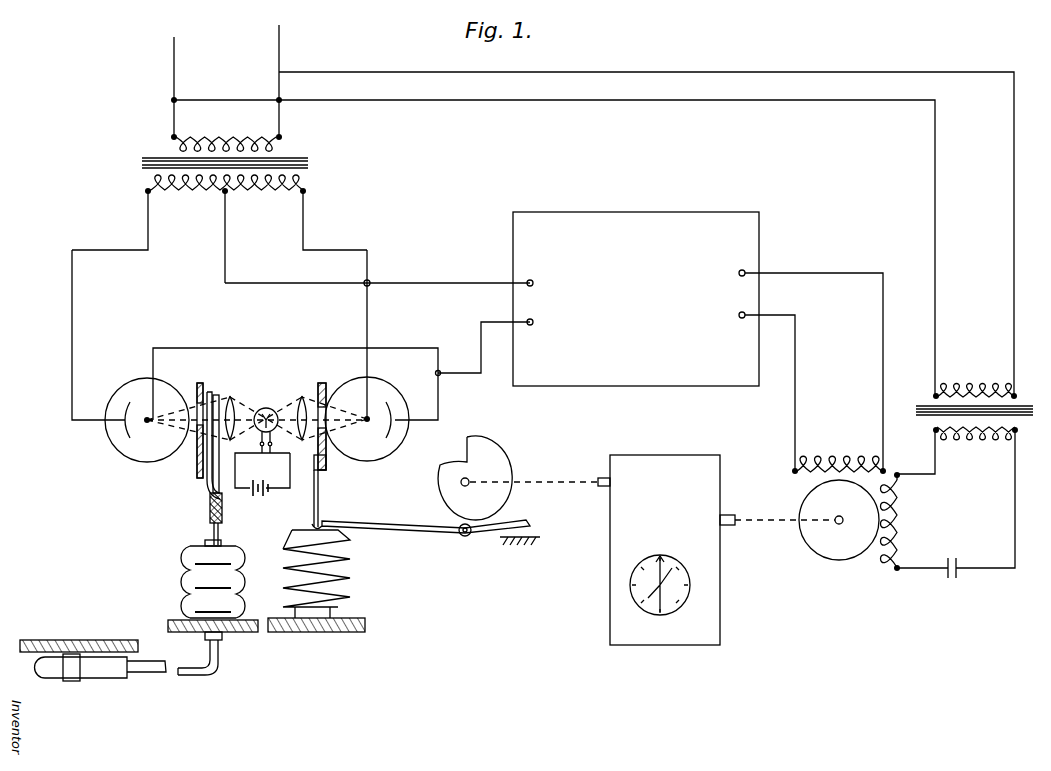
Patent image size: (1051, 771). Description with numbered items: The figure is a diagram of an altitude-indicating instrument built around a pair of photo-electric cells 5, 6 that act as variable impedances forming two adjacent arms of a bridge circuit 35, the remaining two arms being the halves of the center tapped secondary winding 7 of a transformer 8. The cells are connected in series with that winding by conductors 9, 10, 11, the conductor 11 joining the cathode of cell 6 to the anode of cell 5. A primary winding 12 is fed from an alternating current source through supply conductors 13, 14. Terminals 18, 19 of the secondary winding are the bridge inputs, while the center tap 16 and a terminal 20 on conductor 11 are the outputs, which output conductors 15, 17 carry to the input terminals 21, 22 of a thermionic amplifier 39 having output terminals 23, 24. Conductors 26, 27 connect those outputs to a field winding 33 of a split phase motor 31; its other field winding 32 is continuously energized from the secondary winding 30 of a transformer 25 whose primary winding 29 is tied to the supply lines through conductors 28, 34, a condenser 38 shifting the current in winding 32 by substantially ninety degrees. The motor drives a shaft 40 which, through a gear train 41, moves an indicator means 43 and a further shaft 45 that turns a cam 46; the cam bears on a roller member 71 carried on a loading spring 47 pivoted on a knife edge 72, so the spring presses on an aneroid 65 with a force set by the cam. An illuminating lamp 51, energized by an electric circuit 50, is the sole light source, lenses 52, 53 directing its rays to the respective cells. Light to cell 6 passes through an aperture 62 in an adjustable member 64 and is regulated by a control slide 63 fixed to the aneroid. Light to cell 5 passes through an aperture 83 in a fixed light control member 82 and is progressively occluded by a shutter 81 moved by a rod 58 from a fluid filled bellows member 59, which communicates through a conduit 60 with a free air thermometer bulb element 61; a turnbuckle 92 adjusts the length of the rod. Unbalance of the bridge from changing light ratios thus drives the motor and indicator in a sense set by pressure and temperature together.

The photo-electric cell 5 is at (124, 395).
The photo-electric cell 6 is at (393, 394).
The secondary winding 7 is at (307, 182).
The transformer 8 is at (151, 157).
The conductor 9 is at (70, 272).
The conductor 10 is at (369, 258).
The conductor 11 is at (252, 348).
The primary winding 12 is at (282, 146).
The conductor 13 is at (172, 62).
The conductor 14 is at (283, 42).
The output conductor 15 is at (223, 278).
The center tap 16 is at (224, 195).
The output conductor 17 is at (480, 328).
The terminal 18 is at (146, 195).
The terminal 19 is at (307, 194).
The terminal 20 is at (442, 379).
The input terminal 21 is at (533, 280).
The input terminal 22 is at (533, 325).
The output terminal 23 is at (738, 272).
The output terminal 24 is at (740, 318).
The transformer 25 is at (924, 404).
The conductor 26 is at (881, 328).
The conductor 27 is at (797, 392).
The conductor 28 is at (937, 287).
The primary winding 29 is at (968, 392).
The secondary winding 30 is at (1000, 438).
The motor 31 is at (858, 560).
The field winding 32 is at (912, 527).
The field winding 33 is at (832, 464).
The conductor 34 is at (1012, 178).
The bridge circuit 35 is at (130, 307).
The condenser 38 is at (958, 572).
The thermionic amplifier 39 is at (757, 232).
The shaft 40 is at (773, 523).
The gear train 41 is at (723, 471).
The indicator means 43 is at (690, 585).
The shaft 45 is at (553, 482).
The cam 46 is at (498, 470).
The loading spring 47 is at (427, 531).
The electric circuit 50 is at (282, 490).
The illuminating lamp 51 is at (267, 406).
The lens 52 is at (229, 393).
The lens 53 is at (302, 393).
The rod 58 is at (224, 499).
The bellows member 59 is at (183, 568).
The conduit 60 is at (212, 679).
The thermometer bulb element 61 is at (100, 681).
The aperture 62 is at (330, 393).
The control slide 63 is at (322, 495).
The adjustable member 64 is at (328, 464).
The aneroid 65 is at (352, 575).
The roller member 71 is at (469, 536).
The knife edge 72 is at (542, 534).
The shutter 81 is at (211, 488).
The fixed light control member 82 is at (205, 478).
The aperture 83 is at (196, 386).
The turnbuckle 92 is at (223, 518).